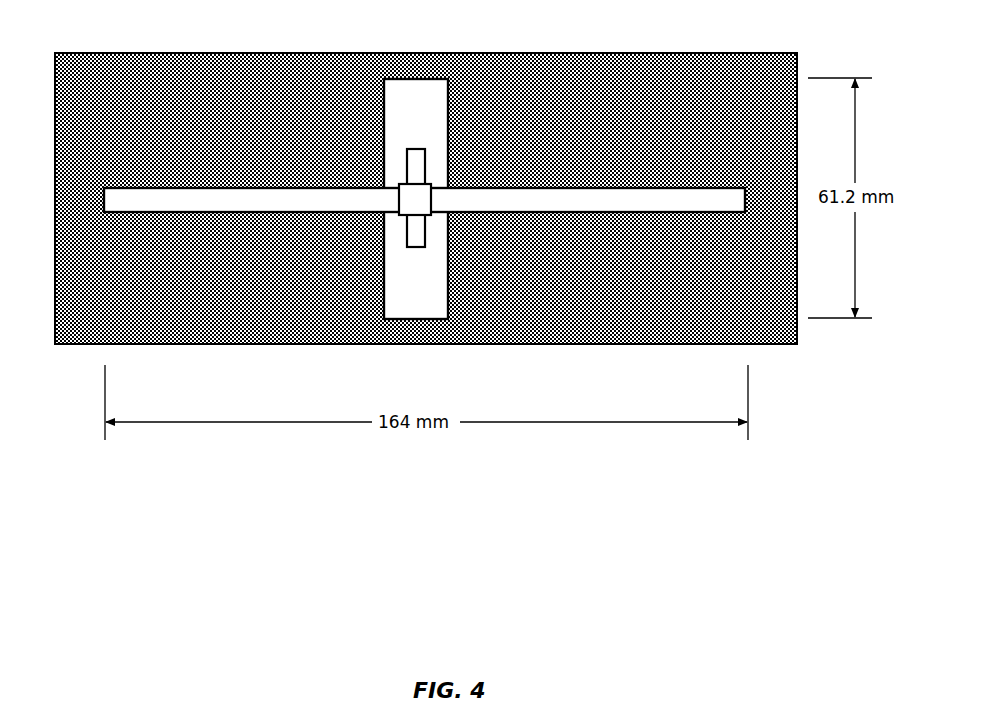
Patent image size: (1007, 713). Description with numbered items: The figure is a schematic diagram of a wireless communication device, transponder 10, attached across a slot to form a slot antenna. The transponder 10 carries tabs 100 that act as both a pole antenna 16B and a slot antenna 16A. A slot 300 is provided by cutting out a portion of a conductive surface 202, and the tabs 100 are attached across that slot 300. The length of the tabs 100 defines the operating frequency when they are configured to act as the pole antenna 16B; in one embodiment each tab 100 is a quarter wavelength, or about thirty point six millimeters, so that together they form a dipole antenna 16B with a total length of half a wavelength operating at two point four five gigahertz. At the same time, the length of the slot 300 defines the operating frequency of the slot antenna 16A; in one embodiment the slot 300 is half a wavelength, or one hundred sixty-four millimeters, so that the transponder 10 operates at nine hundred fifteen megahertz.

The conductive surface 202 is at (142, 70).
The tabs 100 is at (412, 97).
The pole antenna 16B is at (462, 110).
The slot 300 is at (612, 185).
The slot antenna 16A is at (729, 172).
The transponder 10 is at (427, 205).